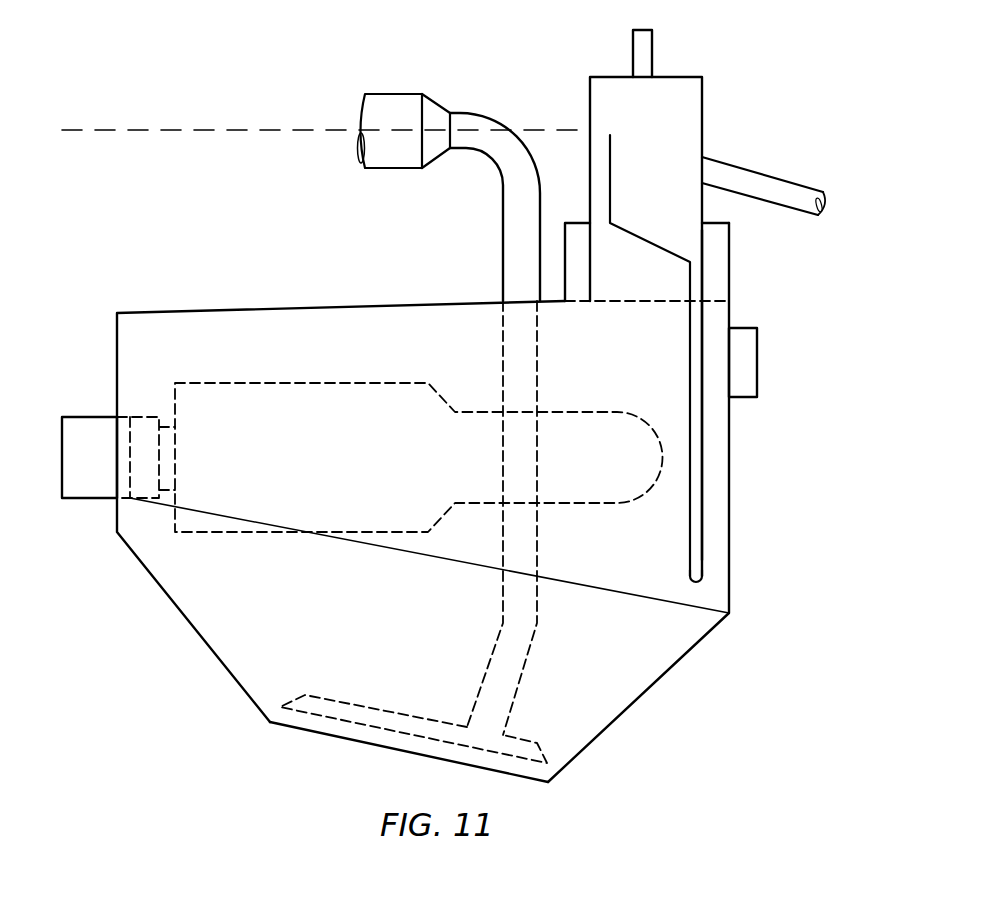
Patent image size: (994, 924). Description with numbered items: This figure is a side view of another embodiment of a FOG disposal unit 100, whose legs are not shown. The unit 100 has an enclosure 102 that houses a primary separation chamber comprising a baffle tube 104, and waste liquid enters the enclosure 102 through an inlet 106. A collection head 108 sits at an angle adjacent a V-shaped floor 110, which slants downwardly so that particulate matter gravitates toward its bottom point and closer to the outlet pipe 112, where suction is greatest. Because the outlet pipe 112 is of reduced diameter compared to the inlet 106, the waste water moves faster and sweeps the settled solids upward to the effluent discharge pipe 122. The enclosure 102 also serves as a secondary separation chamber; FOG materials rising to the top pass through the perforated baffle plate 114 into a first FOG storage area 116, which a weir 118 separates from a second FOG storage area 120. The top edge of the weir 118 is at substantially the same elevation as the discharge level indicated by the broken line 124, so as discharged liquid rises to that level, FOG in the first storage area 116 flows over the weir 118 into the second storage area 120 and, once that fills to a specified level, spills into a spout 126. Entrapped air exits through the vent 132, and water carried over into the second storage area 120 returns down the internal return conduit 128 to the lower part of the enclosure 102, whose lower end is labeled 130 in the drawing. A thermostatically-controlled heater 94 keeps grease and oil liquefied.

The FOG disposal unit 100 is at (88, 204).
The enclosure 102 is at (138, 294).
The baffle tube 104 is at (480, 410).
The inlet 106 is at (90, 499).
The collection head 108 is at (327, 694).
The V-shaped floor 110 is at (295, 731).
The outlet pipe 112 is at (537, 523).
The perforated baffle plate 114 is at (647, 304).
The first FOG storage area 116 is at (577, 245).
The weir 118 is at (652, 243).
The second FOG storage area 120 is at (673, 151).
The effluent discharge pipe 122 is at (392, 170).
The broken line 124 is at (222, 128).
The spout 126 is at (795, 181).
The internal return conduit 128 is at (700, 450).
The probe tip 130 is at (700, 590).
The vent 132 is at (655, 52).
The thermostatically-controlled heater 94 is at (757, 362).